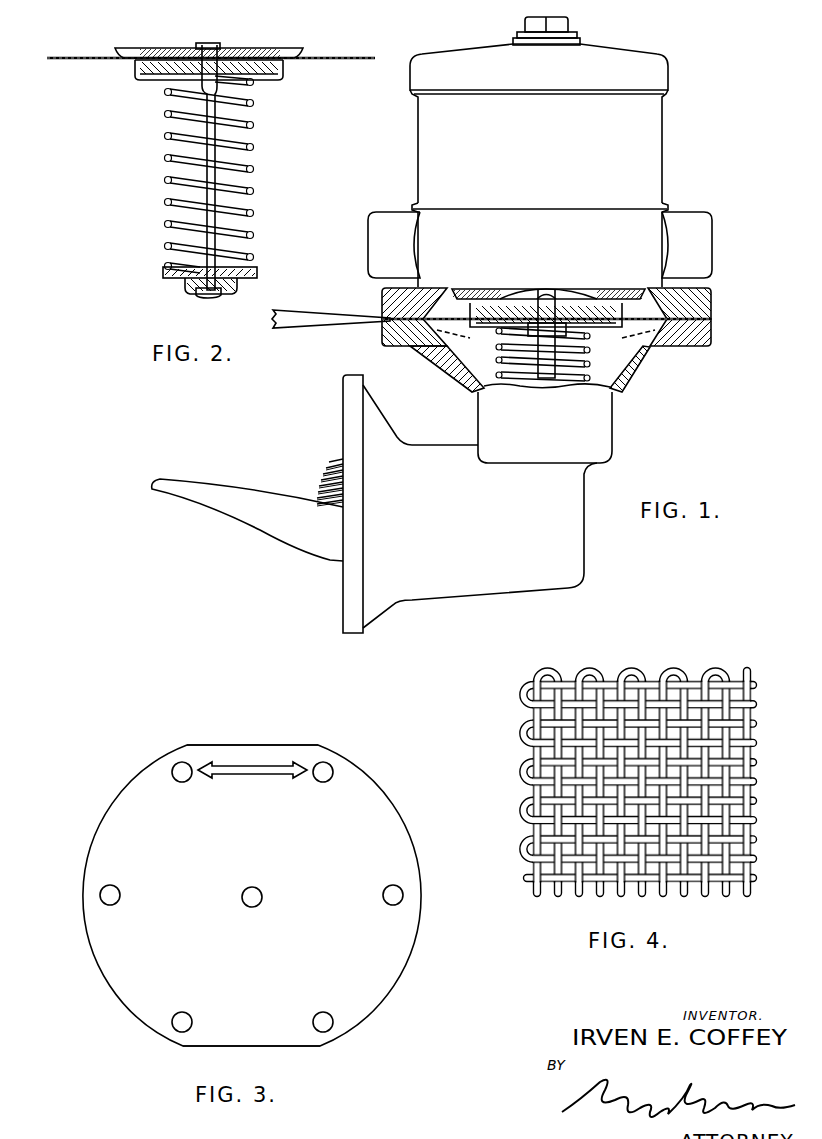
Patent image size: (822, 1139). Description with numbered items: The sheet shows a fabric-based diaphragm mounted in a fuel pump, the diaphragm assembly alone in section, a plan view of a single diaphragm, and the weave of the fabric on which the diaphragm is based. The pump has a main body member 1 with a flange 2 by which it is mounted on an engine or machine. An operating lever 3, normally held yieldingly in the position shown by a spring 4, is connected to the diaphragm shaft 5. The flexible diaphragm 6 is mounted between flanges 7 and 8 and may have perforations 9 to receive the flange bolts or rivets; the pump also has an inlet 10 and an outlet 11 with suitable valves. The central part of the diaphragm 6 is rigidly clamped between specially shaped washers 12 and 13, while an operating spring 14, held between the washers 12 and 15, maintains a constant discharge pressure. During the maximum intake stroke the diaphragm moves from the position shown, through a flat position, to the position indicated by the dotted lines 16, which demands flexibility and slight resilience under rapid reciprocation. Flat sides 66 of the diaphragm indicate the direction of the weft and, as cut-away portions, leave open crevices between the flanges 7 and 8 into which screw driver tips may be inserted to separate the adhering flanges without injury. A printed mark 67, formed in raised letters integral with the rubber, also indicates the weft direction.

In FIG. 1, the main body member 1 is at (480, 506).
In FIG. 1, the flange 2 is at (355, 628).
In FIG. 1, the operating lever 3 is at (236, 526).
In FIG. 1, the spring 4 is at (328, 468).
In FIG. 2, the diaphragm shaft 5 is at (220, 184).
In FIG. 1, the diaphragm shaft 5 is at (556, 372).
In FIG. 1, the flexible diaphragm 6 is at (645, 322).
In FIG. 3, the flexible diaphragm 6 is at (367, 812).
In FIG. 1, the flange 7 is at (712, 338).
In FIG. 1, the flange 8 is at (715, 292).
In FIG. 3, the perforations 9 is at (323, 766).
In FIG. 1, the inlet 10 is at (370, 234).
In FIG. 1, the outlet 11 is at (712, 236).
In FIG. 2, the washer 12 is at (150, 81).
In FIG. 1, the washer 12 is at (470, 328).
In FIG. 2, the washer 13 is at (141, 33).
In FIG. 1, the washer 13 is at (470, 272).
In FIG. 2, the operating spring 14 is at (254, 150).
In FIG. 1, the operating spring 14 is at (500, 382).
In FIG. 2, the washer 15 is at (181, 284).
In FIG. 1, the dotted lines 16 is at (628, 338).
In FIG. 2, the flat sides 66 is at (366, 57).
In FIG. 1, the flat sides 66 is at (386, 318).
In FIG. 3, the flat sides 66 is at (250, 740).
In FIG. 3, the printed mark 67 is at (244, 775).